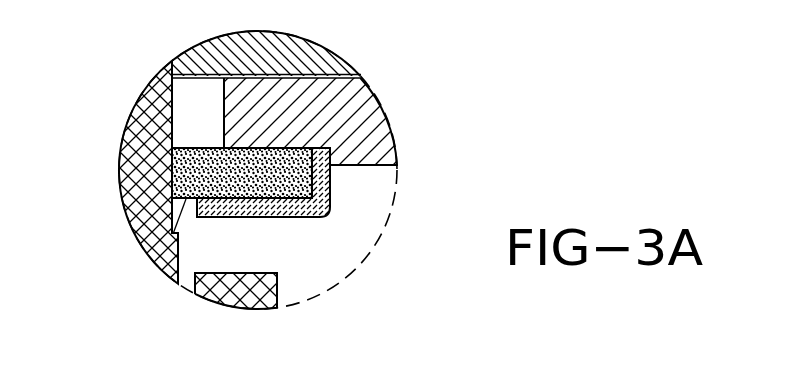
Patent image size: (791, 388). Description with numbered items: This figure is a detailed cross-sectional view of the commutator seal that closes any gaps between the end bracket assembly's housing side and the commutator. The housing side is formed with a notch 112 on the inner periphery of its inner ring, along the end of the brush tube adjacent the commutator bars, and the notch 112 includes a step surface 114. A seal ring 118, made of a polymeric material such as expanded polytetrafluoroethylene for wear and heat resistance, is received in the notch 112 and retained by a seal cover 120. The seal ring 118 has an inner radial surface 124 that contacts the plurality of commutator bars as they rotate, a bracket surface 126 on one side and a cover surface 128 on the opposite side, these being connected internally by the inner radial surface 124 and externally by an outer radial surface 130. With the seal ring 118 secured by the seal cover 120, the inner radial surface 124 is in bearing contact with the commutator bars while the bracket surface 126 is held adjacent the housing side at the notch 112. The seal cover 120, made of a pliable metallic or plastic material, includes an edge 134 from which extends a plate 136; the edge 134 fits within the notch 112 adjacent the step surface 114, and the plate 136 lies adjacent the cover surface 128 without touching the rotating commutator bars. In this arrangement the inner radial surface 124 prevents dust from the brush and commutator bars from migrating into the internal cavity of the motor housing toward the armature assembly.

The notch 112 is at (290, 148).
The step surface 114 is at (330, 149).
The seal ring 118 is at (331, 201).
The seal cover 120 is at (264, 206).
The inner radial surface 124 is at (172, 177).
The bracket surface 126 is at (197, 147).
The cover surface 128 is at (172, 213).
The outer radial surface 130 is at (311, 193).
The edge 134 is at (332, 208).
The plate 136 is at (220, 217).